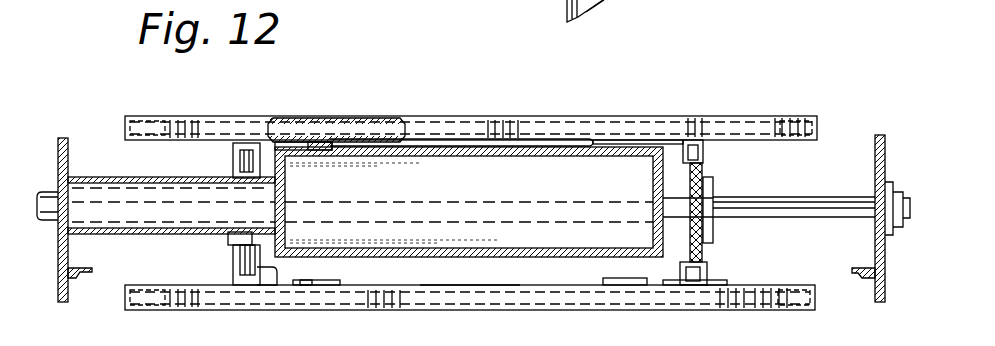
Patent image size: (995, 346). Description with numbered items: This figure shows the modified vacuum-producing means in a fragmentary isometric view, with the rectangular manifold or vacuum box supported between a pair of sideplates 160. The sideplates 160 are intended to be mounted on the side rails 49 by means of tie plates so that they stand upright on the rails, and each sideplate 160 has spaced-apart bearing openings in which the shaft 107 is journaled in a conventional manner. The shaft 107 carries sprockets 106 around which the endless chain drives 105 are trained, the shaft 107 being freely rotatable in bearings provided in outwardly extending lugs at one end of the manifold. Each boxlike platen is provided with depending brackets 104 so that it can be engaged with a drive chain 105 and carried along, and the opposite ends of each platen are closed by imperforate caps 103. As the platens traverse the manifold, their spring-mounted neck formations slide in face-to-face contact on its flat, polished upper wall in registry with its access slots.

The side rail 49 is at (70, 300).
The imperforate cap 103 is at (817, 127).
The bracket 104 is at (235, 147).
The chain drive 105 is at (238, 260).
The sprocket 106 is at (225, 238).
The shaft 107 is at (190, 205).
The sideplate 160 is at (58, 146).